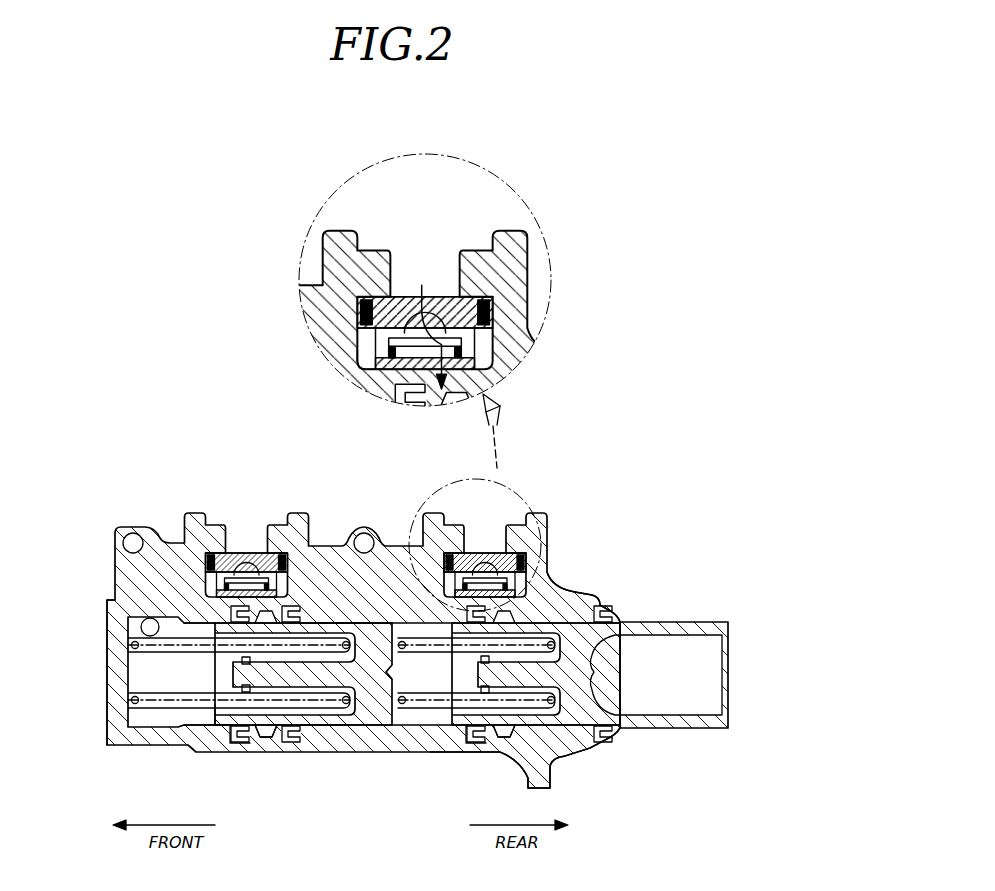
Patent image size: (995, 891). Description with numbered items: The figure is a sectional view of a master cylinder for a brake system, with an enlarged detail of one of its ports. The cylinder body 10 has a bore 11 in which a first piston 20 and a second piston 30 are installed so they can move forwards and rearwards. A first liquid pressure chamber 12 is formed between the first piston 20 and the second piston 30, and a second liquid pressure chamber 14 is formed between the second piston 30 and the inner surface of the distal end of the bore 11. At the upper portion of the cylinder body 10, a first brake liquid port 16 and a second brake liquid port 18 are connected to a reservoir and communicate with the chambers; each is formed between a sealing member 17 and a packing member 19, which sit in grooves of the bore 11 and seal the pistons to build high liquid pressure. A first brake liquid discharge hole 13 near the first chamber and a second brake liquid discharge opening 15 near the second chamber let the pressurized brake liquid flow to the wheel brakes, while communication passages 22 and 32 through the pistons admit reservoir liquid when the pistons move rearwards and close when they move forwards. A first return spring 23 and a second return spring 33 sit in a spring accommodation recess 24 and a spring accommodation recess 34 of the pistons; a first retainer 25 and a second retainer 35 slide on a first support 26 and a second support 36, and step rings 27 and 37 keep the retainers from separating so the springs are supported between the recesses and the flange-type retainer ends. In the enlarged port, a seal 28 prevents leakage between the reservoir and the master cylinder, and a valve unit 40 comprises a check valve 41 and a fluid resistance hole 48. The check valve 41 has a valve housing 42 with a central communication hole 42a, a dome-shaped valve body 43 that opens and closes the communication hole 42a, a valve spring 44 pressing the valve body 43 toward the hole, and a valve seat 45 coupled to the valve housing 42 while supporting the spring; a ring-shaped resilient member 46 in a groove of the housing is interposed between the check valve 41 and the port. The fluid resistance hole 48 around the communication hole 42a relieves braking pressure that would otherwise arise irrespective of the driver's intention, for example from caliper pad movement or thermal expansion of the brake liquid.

The cylinder body 10 is at (101, 741).
The bore 11 is at (394, 621).
The first liquid pressure chamber 12 is at (410, 713).
The first brake liquid discharge hole 13 is at (322, 612).
The second liquid pressure chamber 14 is at (152, 722).
The second brake liquid discharge opening 15 is at (128, 632).
The first brake liquid port 16 is at (533, 601).
The sealing member 17 is at (243, 742).
The second brake liquid port 18 is at (265, 553).
The packing member 19 is at (290, 742).
The first piston 20 is at (671, 611).
The communication passage 22 is at (470, 735).
The first return spring 23 is at (557, 735).
The spring accommodation recess 24 is at (522, 771).
The first retainer 25 is at (438, 700).
The first support 26 is at (486, 722).
The step ring 27 is at (480, 660).
The seal 28 is at (324, 387).
The second piston 30 is at (329, 727).
The communication passage 32 is at (233, 743).
The second return spring 33 is at (326, 745).
The spring accommodation recess 34 is at (220, 713).
The second retainer 35 is at (166, 651).
The second support 36 is at (266, 740).
The step ring 37 is at (128, 699).
The valve unit 40 is at (424, 337).
The check valve 41 is at (424, 337).
The valve housing 42 is at (424, 312).
The communication hole 42a is at (368, 360).
The valve body 43 is at (424, 322).
The valve spring 44 is at (424, 348).
The valve seat 45 is at (424, 364).
The resilient member 46 is at (425, 312).
The fluid resistance hole 48 is at (434, 337).